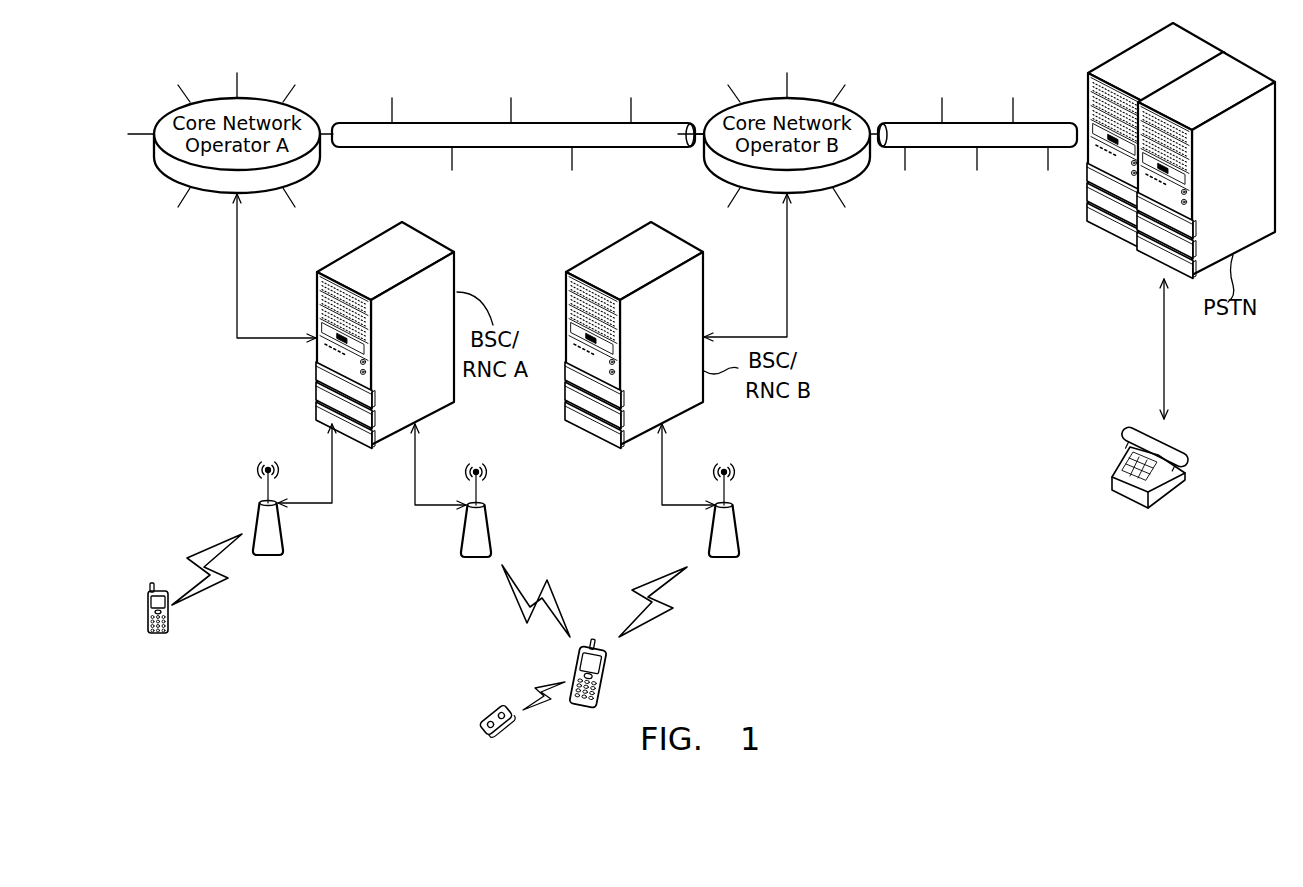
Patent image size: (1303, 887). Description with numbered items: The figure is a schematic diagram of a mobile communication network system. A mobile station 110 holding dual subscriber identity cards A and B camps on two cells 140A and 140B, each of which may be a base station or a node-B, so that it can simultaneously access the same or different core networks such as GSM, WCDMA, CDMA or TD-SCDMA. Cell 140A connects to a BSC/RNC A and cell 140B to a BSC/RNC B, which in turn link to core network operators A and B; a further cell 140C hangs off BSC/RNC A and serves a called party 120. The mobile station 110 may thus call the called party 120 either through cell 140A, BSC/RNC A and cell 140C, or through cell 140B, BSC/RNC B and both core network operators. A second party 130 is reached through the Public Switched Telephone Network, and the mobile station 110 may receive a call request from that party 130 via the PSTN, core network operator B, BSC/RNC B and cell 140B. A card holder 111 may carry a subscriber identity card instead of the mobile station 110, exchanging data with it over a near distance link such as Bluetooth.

The mobile station 110 is at (608, 679).
The card holder 111 is at (514, 725).
The called party 120 is at (168, 625).
The called party 130 is at (1185, 478).
The cell 140A is at (492, 528).
The cell 140B is at (739, 528).
The cell 140C is at (284, 528).